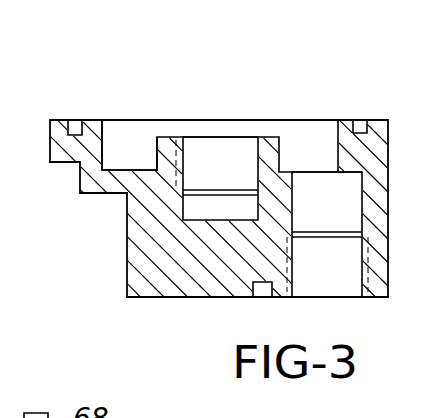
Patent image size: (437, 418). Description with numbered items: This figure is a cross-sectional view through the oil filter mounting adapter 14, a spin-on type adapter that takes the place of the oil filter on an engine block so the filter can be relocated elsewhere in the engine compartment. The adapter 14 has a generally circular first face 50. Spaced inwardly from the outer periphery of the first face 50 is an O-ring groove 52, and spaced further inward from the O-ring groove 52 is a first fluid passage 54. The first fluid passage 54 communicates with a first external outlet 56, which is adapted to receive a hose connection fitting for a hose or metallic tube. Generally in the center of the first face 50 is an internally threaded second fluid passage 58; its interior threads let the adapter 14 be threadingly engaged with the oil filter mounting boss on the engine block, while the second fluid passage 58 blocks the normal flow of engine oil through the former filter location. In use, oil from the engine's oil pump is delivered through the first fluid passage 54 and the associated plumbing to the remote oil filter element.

The oil filter mounting adapter 14 is at (118, 251).
The first face 50 is at (368, 120).
The O-ring groove 52 is at (72, 124).
The first fluid passage 54 is at (100, 150).
The first external outlet 56 is at (313, 283).
The second fluid passage 58 is at (209, 172).